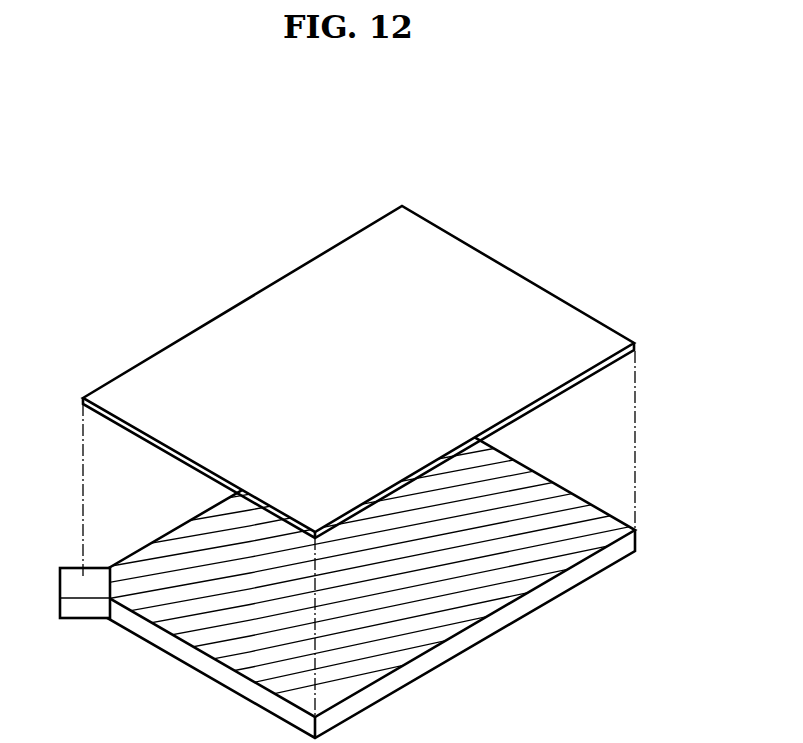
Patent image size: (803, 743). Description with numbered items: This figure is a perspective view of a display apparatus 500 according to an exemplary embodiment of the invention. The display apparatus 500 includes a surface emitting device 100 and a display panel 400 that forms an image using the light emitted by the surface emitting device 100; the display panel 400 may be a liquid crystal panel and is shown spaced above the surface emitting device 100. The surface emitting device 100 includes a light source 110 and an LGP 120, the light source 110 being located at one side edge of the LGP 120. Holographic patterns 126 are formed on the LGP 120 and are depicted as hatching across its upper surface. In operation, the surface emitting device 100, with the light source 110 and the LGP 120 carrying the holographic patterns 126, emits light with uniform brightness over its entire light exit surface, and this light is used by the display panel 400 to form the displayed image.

The display apparatus 500 is at (383, 425).
The display panel 400 is at (556, 309).
The surface emitting device 100 is at (384, 526).
The LGP 120 is at (360, 525).
The holographic patterns 126 is at (387, 660).
The light source 110 is at (80, 608).